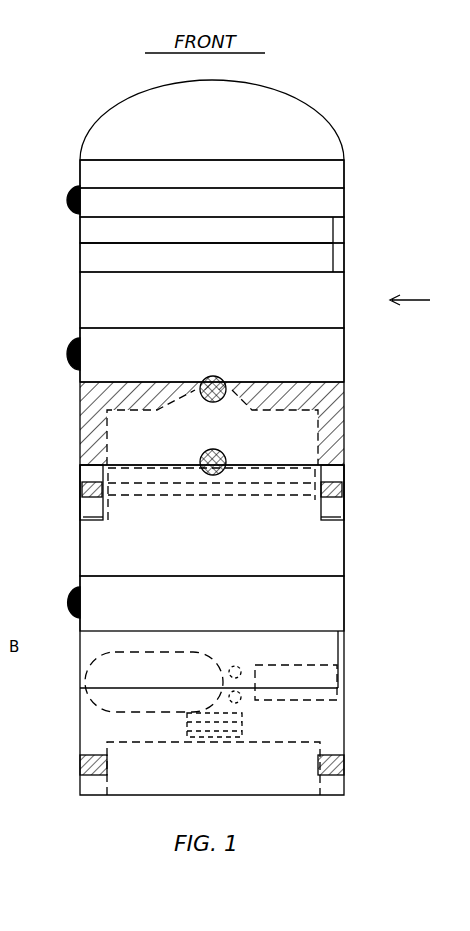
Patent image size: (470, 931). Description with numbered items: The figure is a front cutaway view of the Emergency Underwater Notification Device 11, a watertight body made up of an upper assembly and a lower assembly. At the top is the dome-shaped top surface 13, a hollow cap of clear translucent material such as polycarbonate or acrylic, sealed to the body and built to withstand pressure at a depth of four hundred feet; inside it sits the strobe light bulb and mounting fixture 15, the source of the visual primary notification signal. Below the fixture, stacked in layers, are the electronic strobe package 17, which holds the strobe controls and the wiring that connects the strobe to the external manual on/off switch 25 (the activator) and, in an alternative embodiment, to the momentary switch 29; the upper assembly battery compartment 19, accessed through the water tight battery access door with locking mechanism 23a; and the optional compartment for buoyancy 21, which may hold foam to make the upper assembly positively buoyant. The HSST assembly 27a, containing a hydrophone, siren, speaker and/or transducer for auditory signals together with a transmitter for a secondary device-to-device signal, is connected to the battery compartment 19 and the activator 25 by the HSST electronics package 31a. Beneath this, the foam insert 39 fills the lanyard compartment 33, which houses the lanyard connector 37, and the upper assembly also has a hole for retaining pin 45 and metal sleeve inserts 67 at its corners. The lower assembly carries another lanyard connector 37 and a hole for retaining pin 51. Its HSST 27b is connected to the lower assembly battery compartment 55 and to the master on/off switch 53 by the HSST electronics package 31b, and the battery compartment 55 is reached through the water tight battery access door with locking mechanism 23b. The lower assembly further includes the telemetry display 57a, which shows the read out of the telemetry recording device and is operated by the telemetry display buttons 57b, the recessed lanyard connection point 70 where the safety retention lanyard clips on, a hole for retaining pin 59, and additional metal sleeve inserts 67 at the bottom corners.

The Emergency Underwater Notification Device 11 is at (420, 300).
The top surface 13 is at (212, 120).
The strobe light bulb and mounting fixture 15 is at (212, 174).
The electronic strobe package 17 is at (212, 202).
The upper assembly battery compartment 19 is at (212, 231).
The optional compartment for buoyancy 21 is at (212, 257).
The water tight battery access door with locking mechanism 23a is at (370, 244).
The water tight battery access door with locking mechanism 23b is at (245, 660).
The external manual on/off switch 25 is at (60, 192).
The HSST assembly 27a is at (212, 300).
The HSST 27b is at (212, 520).
The momentary switch 29 is at (63, 353).
The HSST electronics package 31a is at (212, 355).
The HSST electronics package 31b is at (212, 603).
The lanyard compartment 33 is at (212, 427).
The lanyard connector 37 is at (217, 407).
The foam insert 39 is at (330, 402).
The hole for retaining pin 45 is at (78, 492).
The hole for retaining pin 51 is at (283, 492).
The master on/off switch 53 is at (60, 597).
The lower assembly battery compartment 55 is at (248, 671).
The telemetry display 57a is at (154, 682).
The telemetry display buttons 57b is at (296, 682).
The hole for retaining pin 59 is at (113, 768).
The metal sleeve insert 67 is at (82, 488).
The recessed lanyard connection point 70 is at (260, 726).